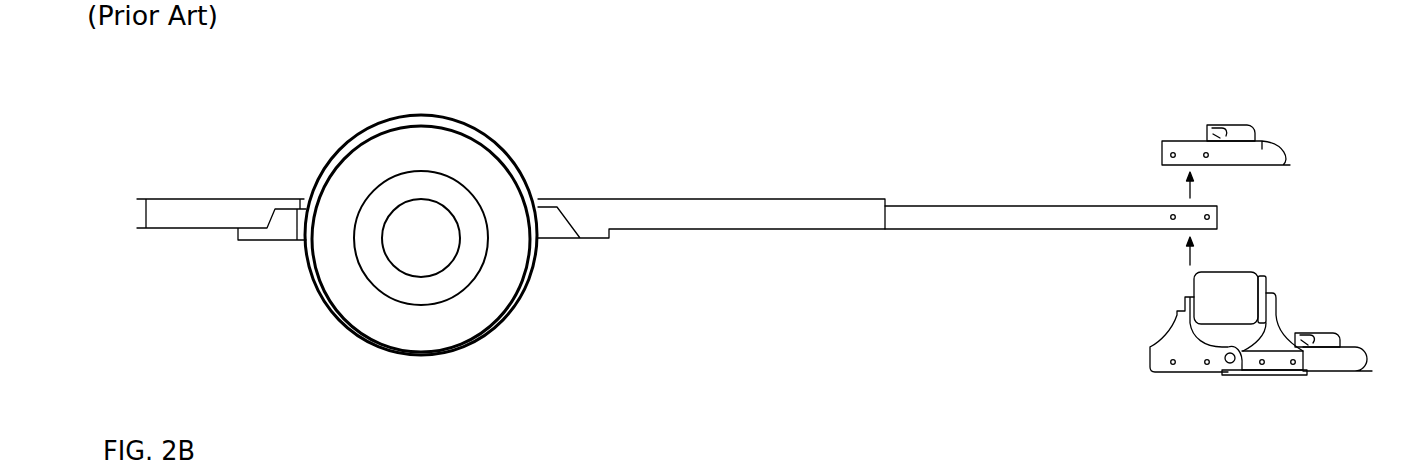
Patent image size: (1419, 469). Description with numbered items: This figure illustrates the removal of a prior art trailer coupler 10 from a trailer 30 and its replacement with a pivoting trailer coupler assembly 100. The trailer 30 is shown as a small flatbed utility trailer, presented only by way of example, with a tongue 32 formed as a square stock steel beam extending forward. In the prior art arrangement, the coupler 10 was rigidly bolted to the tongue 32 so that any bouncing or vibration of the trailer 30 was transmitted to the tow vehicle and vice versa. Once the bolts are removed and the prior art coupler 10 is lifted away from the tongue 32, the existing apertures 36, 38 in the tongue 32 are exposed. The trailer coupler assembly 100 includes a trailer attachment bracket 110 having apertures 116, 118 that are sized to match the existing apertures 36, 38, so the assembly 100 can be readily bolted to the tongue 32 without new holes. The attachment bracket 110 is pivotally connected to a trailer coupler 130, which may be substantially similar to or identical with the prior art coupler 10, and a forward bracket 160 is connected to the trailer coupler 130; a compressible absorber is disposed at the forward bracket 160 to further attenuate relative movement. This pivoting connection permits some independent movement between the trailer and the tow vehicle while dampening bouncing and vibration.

The prior art trailer coupler 10 is at (1263, 151).
The trailer 30 is at (707, 181).
The tongue 32 is at (1081, 200).
The existing aperture 36 is at (1171, 220).
The existing aperture 38 is at (1209, 216).
The pivoting trailer coupler assembly 100 is at (1220, 314).
The trailer attachment bracket 110 is at (1173, 362).
The aperture 116 is at (1172, 366).
The aperture 118 is at (1206, 366).
The trailer coupler 130 is at (1330, 369).
The forward bracket 160 is at (1287, 315).